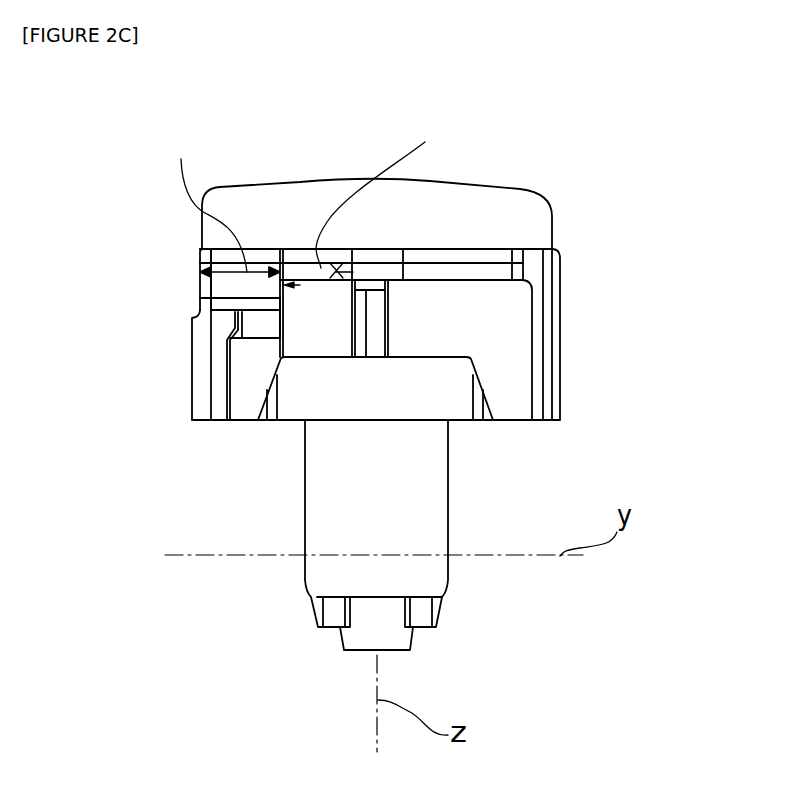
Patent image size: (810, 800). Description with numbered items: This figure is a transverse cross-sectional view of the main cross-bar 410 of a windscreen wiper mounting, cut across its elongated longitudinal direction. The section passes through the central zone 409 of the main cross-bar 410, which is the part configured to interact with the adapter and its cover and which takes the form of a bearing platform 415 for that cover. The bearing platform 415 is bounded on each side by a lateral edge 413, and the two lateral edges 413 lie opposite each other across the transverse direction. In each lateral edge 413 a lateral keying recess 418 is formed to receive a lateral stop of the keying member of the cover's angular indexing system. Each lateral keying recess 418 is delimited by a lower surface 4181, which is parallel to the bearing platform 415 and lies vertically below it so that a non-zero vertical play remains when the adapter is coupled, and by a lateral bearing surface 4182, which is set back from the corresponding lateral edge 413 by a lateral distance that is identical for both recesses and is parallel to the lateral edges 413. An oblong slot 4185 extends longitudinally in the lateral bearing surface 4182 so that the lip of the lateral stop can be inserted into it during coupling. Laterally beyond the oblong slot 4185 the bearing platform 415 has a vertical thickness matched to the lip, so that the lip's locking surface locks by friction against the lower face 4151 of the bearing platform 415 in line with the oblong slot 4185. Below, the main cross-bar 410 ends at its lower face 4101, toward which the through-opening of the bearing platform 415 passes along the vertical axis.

The main cross-bar 410 is at (648, 212).
The lateral edge 413 is at (192, 350).
The central zone 409 is at (362, 267).
The bearing platform 415 is at (370, 303).
The lateral keying recess 418 is at (198, 251).
The lower surface 4181 is at (203, 289).
The lateral bearing surface 4182 is at (259, 262).
The oblong slot 4185 is at (308, 278).
The lower face of the bearing platform 4151 is at (318, 290).
The lower face 4101 is at (543, 421).